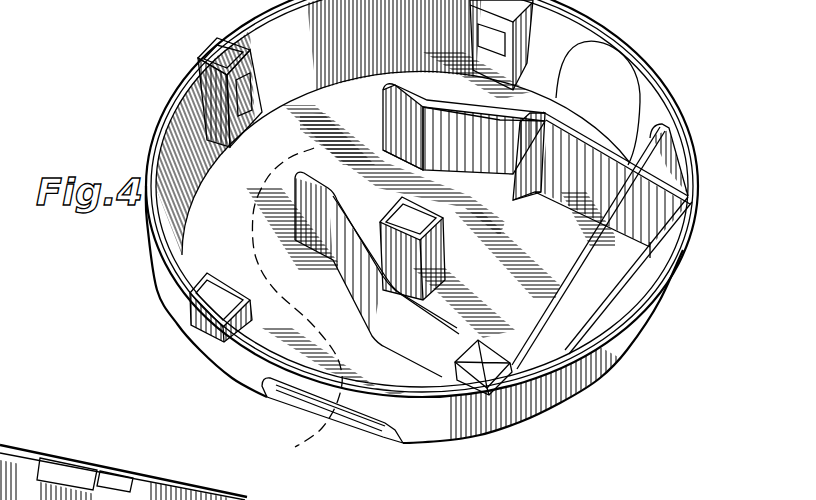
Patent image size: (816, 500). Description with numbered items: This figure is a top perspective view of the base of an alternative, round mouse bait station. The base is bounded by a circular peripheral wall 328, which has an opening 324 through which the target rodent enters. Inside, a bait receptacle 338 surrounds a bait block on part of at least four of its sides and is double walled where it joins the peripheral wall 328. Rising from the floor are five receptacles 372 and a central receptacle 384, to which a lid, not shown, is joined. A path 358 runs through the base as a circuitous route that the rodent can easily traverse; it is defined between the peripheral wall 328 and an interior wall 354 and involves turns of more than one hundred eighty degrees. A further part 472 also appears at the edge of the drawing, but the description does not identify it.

The peripheral wall 328 is at (306, 56).
The opening 324 is at (565, 88).
The interior wall 354 is at (383, 105).
The bait receptacle 338 is at (467, 330).
The receptacles 372 is at (222, 44).
The central receptacle 384 is at (492, 228).
The path 358 is at (302, 443).
The second housing portion 472 is at (245, 495).